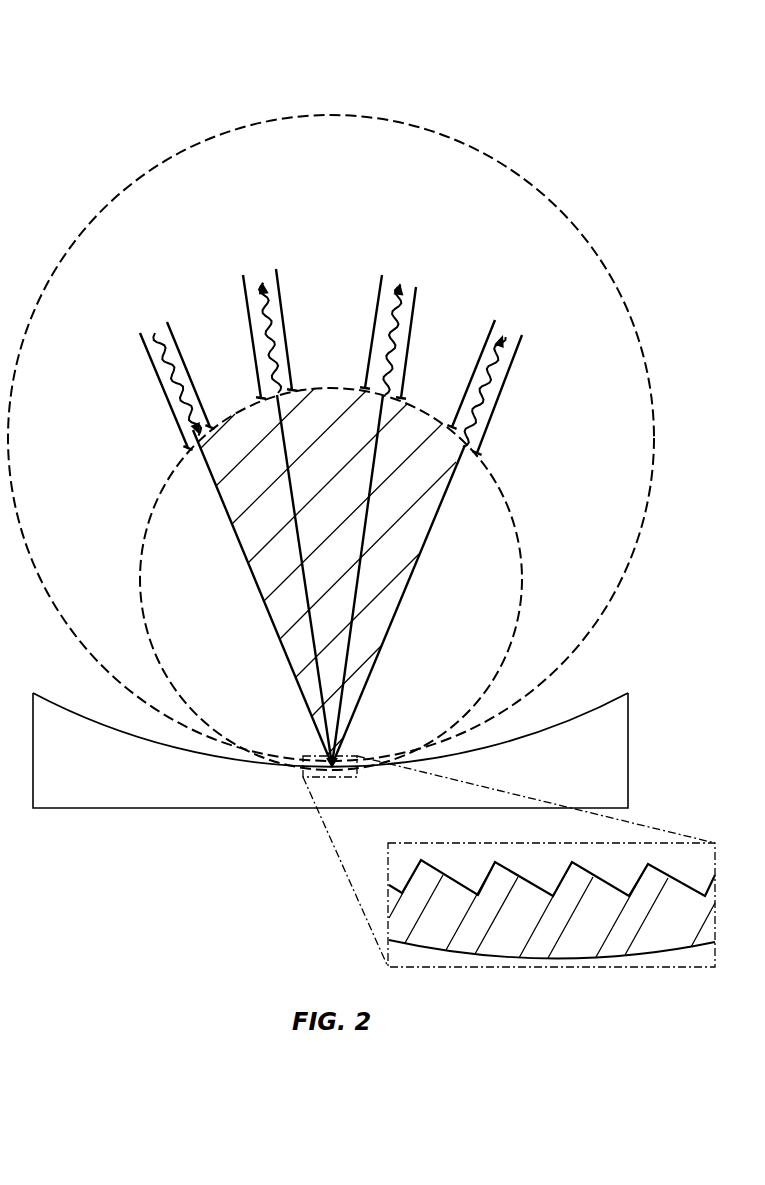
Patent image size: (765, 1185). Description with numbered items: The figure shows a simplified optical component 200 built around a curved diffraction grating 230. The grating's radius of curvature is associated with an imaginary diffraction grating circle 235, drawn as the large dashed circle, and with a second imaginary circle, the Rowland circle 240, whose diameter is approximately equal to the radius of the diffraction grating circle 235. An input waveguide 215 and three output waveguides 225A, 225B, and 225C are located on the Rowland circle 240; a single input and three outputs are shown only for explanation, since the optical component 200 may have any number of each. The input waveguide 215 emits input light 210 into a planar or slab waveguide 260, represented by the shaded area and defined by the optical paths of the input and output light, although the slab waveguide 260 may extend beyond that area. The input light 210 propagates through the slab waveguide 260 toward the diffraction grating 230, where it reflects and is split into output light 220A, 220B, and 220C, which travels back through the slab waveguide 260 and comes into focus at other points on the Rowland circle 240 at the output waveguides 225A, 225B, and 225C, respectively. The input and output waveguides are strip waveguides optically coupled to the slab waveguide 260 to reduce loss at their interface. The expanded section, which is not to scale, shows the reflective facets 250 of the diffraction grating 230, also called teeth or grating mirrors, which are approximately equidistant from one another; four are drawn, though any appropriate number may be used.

The optical component 200 is at (106, 75).
The input light 210 is at (171, 393).
The input waveguide 215 is at (149, 359).
The output light 220A is at (260, 344).
The output light 220B is at (399, 348).
The output light 220C is at (491, 396).
The output waveguide 225A is at (243, 296).
The output waveguide 225B is at (416, 297).
The output waveguide 225C is at (512, 367).
The diffraction grating 230 is at (628, 756).
The diffraction grating circle 235 is at (613, 272).
The Rowland circle 240 is at (508, 507).
The reflective facets 250 is at (514, 869).
The slab waveguide 260 is at (266, 585).